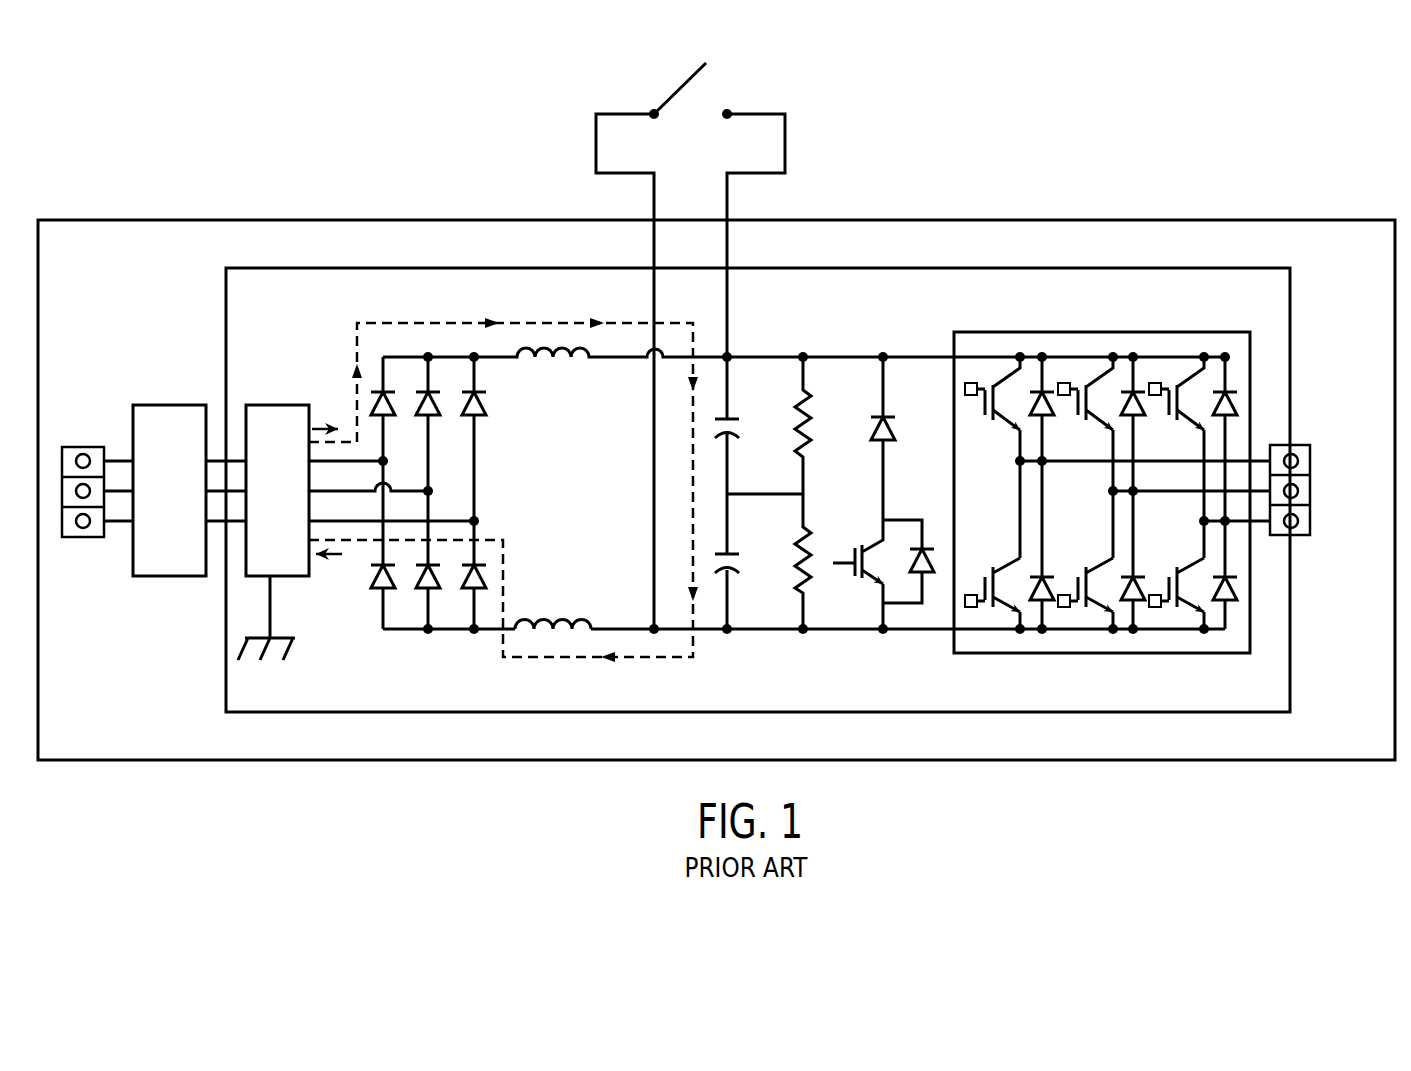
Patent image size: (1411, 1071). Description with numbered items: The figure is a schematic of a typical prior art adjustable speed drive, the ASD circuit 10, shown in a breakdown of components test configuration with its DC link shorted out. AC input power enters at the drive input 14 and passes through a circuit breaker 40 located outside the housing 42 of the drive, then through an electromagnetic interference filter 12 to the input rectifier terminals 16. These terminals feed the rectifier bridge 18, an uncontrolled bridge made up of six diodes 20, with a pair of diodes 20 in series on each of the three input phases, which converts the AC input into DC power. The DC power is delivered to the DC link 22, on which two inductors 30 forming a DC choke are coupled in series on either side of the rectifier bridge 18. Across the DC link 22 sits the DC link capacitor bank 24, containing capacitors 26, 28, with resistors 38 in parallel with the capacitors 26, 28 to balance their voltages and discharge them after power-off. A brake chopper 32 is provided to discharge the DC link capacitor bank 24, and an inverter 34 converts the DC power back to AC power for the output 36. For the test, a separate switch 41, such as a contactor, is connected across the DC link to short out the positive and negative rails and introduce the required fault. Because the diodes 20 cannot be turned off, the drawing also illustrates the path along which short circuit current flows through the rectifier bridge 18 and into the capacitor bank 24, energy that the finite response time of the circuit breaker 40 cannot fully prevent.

The ASD circuit 10 is at (1081, 180).
The electromagnetic interference filter 12 is at (273, 405).
The drive input 14 is at (85, 447).
The input rectifier terminals 16 is at (764, 504).
The rectifier bridge 18 is at (428, 316).
The diodes 20 is at (422, 402).
The DC link 22 is at (627, 630).
The DC link capacitor bank 24 is at (693, 493).
The capacitor 26 is at (733, 417).
The capacitor 28 is at (733, 553).
The inductors 30 is at (565, 354).
The brake chopper 32 is at (871, 590).
The inverter 34 is at (1189, 316).
The output 36 is at (1307, 445).
The resistors 38 is at (812, 429).
The circuit breaker 40 is at (173, 405).
The switch 41 is at (748, 83).
The housing 42 is at (318, 268).